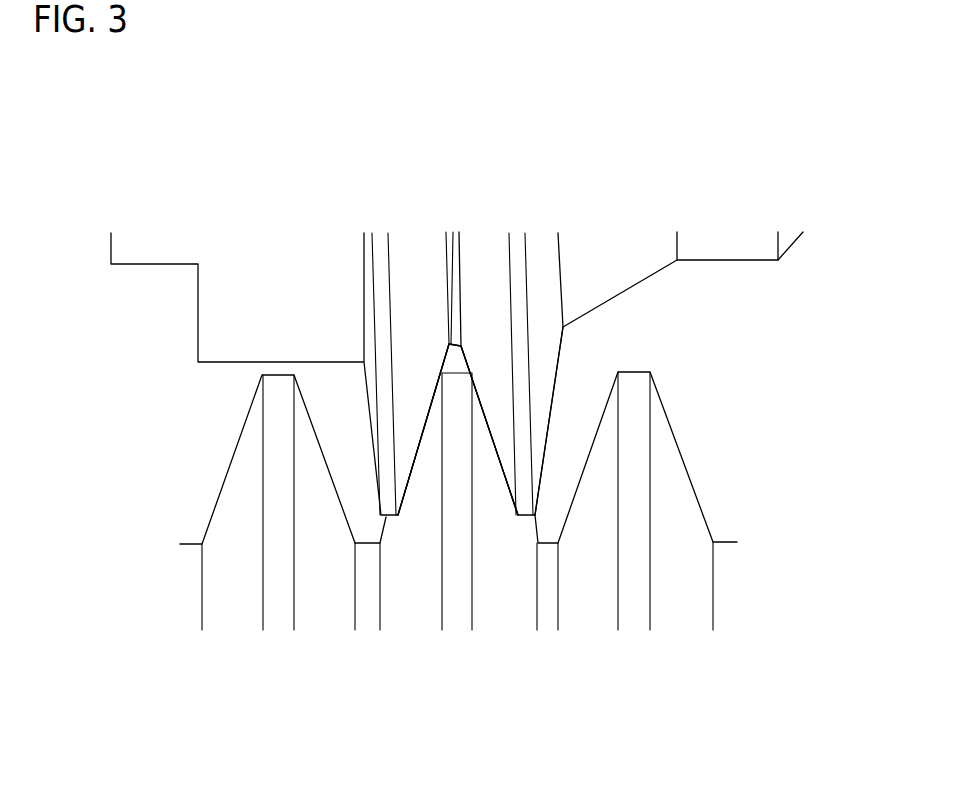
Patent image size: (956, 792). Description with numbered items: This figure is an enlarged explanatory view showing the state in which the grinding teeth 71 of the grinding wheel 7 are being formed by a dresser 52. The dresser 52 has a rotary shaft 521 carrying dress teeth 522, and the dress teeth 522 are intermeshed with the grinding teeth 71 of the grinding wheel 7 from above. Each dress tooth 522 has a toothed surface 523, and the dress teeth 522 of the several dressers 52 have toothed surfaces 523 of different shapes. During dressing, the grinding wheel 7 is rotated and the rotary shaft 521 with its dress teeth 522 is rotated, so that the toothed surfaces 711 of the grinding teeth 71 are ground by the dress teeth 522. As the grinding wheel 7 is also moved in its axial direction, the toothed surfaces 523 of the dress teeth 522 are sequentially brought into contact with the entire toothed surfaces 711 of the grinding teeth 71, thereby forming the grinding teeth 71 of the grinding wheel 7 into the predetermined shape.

The dresser 52 is at (547, 213).
The rotary shaft 521 is at (607, 260).
The dress teeth 522 is at (520, 465).
The toothed surface 523 is at (497, 438).
The grinding wheel 7 is at (684, 652).
The grinding teeth 71 is at (460, 482).
The toothed surface 711 is at (420, 447).